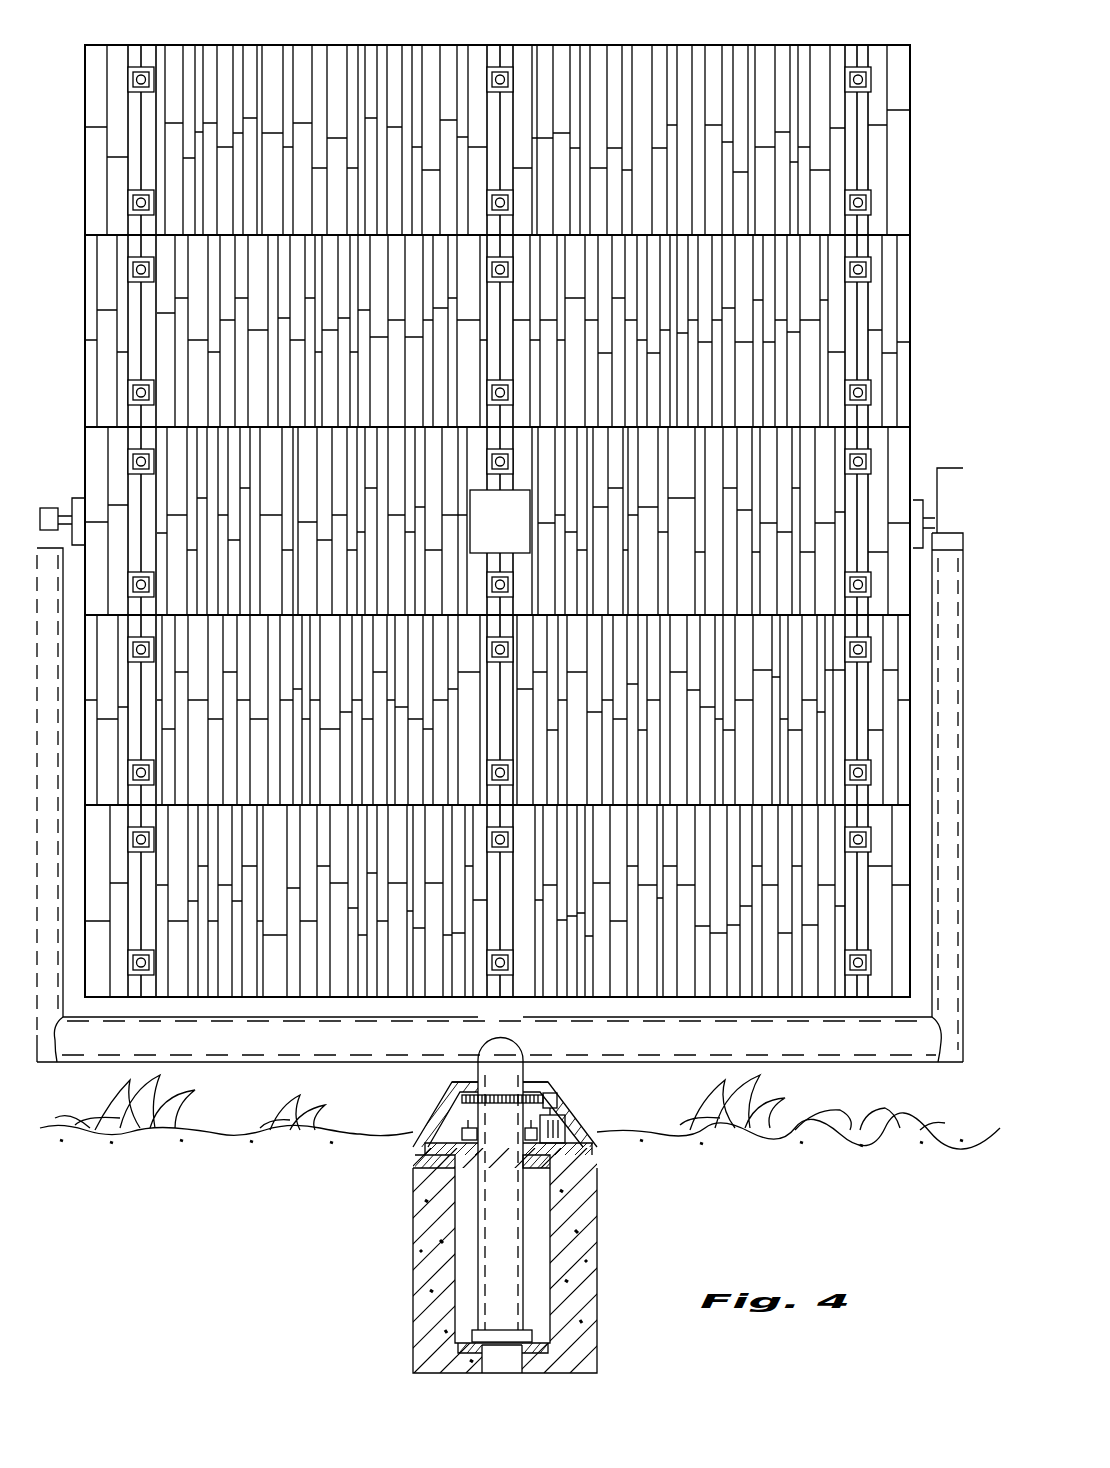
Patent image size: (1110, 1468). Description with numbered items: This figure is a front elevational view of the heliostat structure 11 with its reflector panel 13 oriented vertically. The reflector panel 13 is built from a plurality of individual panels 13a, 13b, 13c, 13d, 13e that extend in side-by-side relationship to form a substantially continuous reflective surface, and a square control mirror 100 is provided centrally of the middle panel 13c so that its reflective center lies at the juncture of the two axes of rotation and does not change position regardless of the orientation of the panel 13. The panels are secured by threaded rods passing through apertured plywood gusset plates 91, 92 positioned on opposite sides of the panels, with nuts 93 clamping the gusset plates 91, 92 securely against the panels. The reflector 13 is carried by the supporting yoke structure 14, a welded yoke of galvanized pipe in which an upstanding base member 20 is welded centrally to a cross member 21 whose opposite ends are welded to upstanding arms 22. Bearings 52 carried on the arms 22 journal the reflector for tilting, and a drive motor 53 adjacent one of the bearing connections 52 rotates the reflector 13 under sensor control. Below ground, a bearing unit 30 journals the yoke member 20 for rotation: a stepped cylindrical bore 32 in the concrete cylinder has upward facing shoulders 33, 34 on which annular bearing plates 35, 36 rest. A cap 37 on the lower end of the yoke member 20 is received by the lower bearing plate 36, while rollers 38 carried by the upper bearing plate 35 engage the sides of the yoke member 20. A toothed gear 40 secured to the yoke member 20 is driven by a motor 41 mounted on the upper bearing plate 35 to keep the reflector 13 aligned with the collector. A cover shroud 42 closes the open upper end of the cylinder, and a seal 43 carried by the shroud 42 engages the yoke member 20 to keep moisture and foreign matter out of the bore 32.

The heliostat structure 11 is at (186, 1093).
The reflector panel 13 is at (524, 498).
The individual panel 13a is at (897, 172).
The individual panel 13b is at (903, 295).
The individual panel 13c is at (903, 460).
The individual panel 13d is at (905, 667).
The individual panel 13e is at (905, 832).
The supporting yoke structure 14 is at (500, 820).
The upstanding base member 20 is at (490, 1060).
The cross member 21 is at (845, 1043).
The upstanding arms 22 is at (50, 1000).
The underground bearing unit 30 is at (487, 1275).
The stepped cylindrical bore 32 is at (558, 1258).
The shoulder 33 is at (425, 1148).
The shoulder 34 is at (455, 1345).
The upper bearing plate 35 is at (453, 1165).
The lower bearing plate 36 is at (462, 1372).
The cap 37 is at (537, 1335).
The rollers 38 is at (474, 1134).
The toothed gear 40 is at (460, 1097).
The motor 41 is at (585, 1135).
The cover shroud 42 is at (565, 1120).
The seal 43 is at (525, 1082).
The bearings 52 is at (58, 508).
The drive motor 53 is at (963, 498).
The gusset plate 91 is at (513, 850).
The gusset plate 92 is at (506, 843).
The nuts 93 is at (502, 836).
The control mirror 100 is at (512, 538).